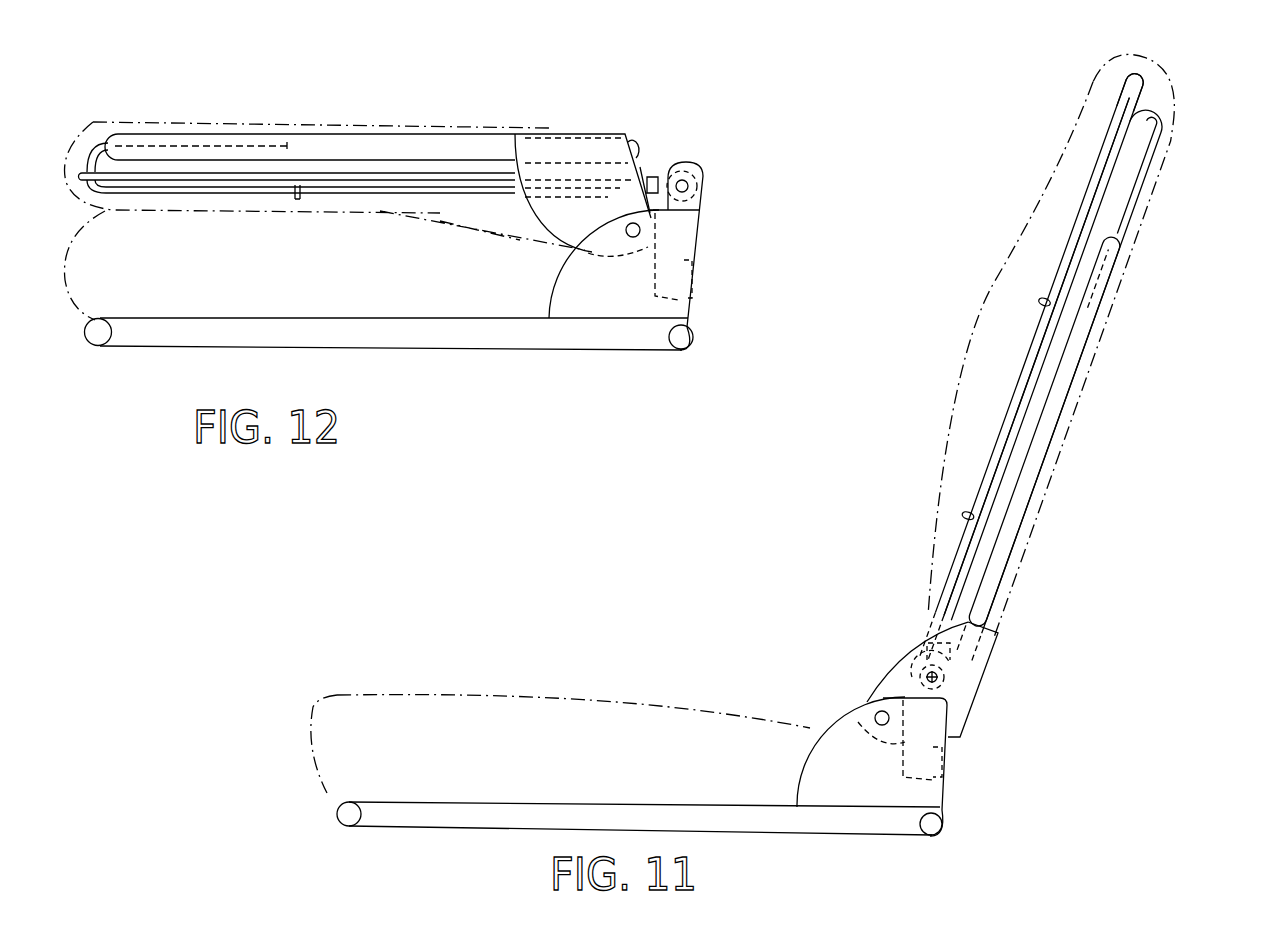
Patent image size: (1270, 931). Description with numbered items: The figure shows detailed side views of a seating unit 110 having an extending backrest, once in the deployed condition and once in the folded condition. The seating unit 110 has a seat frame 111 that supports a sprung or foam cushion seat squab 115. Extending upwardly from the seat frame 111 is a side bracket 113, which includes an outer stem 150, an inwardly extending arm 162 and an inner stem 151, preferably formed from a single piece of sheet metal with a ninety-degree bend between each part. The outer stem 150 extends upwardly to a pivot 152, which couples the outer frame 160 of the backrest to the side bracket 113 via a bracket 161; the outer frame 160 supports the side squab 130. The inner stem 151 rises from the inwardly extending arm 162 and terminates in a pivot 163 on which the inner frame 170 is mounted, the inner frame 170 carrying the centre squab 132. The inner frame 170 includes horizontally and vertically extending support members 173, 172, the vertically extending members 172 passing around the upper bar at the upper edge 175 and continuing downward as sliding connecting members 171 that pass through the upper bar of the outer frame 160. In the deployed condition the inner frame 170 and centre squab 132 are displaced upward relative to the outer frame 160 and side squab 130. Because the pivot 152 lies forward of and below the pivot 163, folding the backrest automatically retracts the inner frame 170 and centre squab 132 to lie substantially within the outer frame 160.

In FIG. 12, the seating unit 110 is at (697, 97).
In FIG. 11, the seating unit 110 is at (752, 555).
In FIG. 12, the seat frame 111 is at (388, 330).
In FIG. 12, the side bracket 113 is at (558, 277).
In FIG. 11, the side bracket 113 is at (812, 763).
In FIG. 11, the seat squab 115 is at (313, 707).
In FIG. 12, the side squab 130 is at (325, 186).
In FIG. 11, the side squab 130 is at (1025, 237).
In FIG. 11, the centre squab 132 is at (1168, 88).
In FIG. 12, the outer stem 150 is at (612, 293).
In FIG. 11, the outer stem 150 is at (867, 777).
In FIG. 12, the inner stem 151 is at (680, 162).
In FIG. 11, the inner stem 151 is at (905, 680).
In FIG. 12, the pivot 152 is at (640, 230).
In FIG. 11, the pivot 152 is at (876, 716).
In FIG. 12, the outer frame 160 is at (436, 136).
In FIG. 11, the outer frame 160 is at (1048, 434).
In FIG. 12, the bracket 161 is at (575, 134).
In FIG. 11, the bracket 161 is at (903, 652).
In FIG. 12, the inwardly extending arm 162 is at (697, 280).
In FIG. 11, the inwardly extending arm 162 is at (943, 770).
In FIG. 12, the pivot 163 is at (688, 186).
In FIG. 11, the pivot 163 is at (947, 677).
In FIG. 12, the inner frame 170 is at (340, 180).
In FIG. 11, the inner frame 170 is at (1045, 360).
In FIG. 12, the sliding connecting member 171 is at (92, 152).
In FIG. 11, the sliding connecting member 171 is at (1141, 178).
In FIG. 12, the vertically extending support member 172 is at (178, 187).
In FIG. 11, the vertically extending support member 172 is at (1096, 164).
In FIG. 12, the horizontally extending support member 173 is at (297, 192).
In FIG. 11, the horizontally extending support member 173 is at (1040, 306).
In FIG. 11, the upper edge 175 is at (1123, 76).